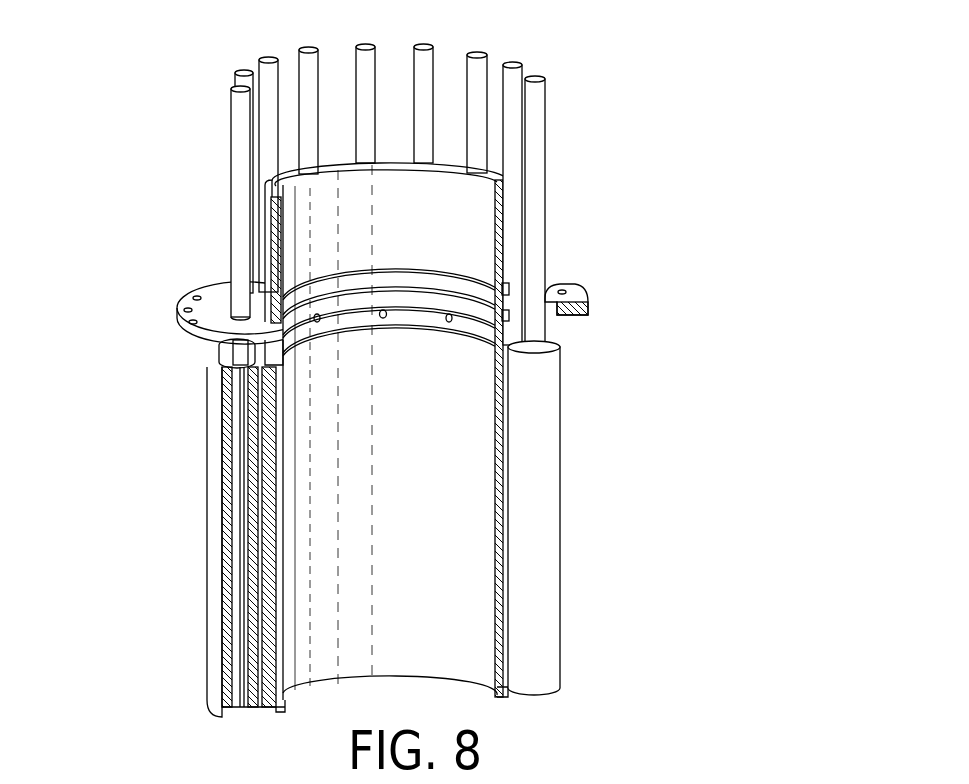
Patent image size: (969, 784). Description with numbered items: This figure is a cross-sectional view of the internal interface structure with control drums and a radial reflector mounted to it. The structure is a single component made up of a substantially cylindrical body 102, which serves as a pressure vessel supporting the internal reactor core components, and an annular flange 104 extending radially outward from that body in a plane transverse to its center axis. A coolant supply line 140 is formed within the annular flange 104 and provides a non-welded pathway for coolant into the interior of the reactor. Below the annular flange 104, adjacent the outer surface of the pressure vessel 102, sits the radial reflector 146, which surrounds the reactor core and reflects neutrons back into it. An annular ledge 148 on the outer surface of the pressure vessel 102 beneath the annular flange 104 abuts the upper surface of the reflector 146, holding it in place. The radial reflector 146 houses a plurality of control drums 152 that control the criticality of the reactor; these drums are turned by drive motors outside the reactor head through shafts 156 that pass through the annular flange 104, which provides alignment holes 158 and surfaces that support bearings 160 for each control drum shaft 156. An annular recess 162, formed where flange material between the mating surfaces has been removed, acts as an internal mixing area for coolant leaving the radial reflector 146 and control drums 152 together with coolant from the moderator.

The cylindrical body 102 is at (275, 545).
The annular flange 104 is at (591, 308).
The coolant supply line 140 is at (180, 333).
The radial reflector 146 is at (208, 626).
The annular ledge 148 is at (248, 374).
The control drum 152 is at (543, 571).
The shaft 156 is at (376, 75).
The alignment hole 158 is at (548, 287).
The bearing 160 is at (223, 308).
The annular recess 162 is at (549, 325).